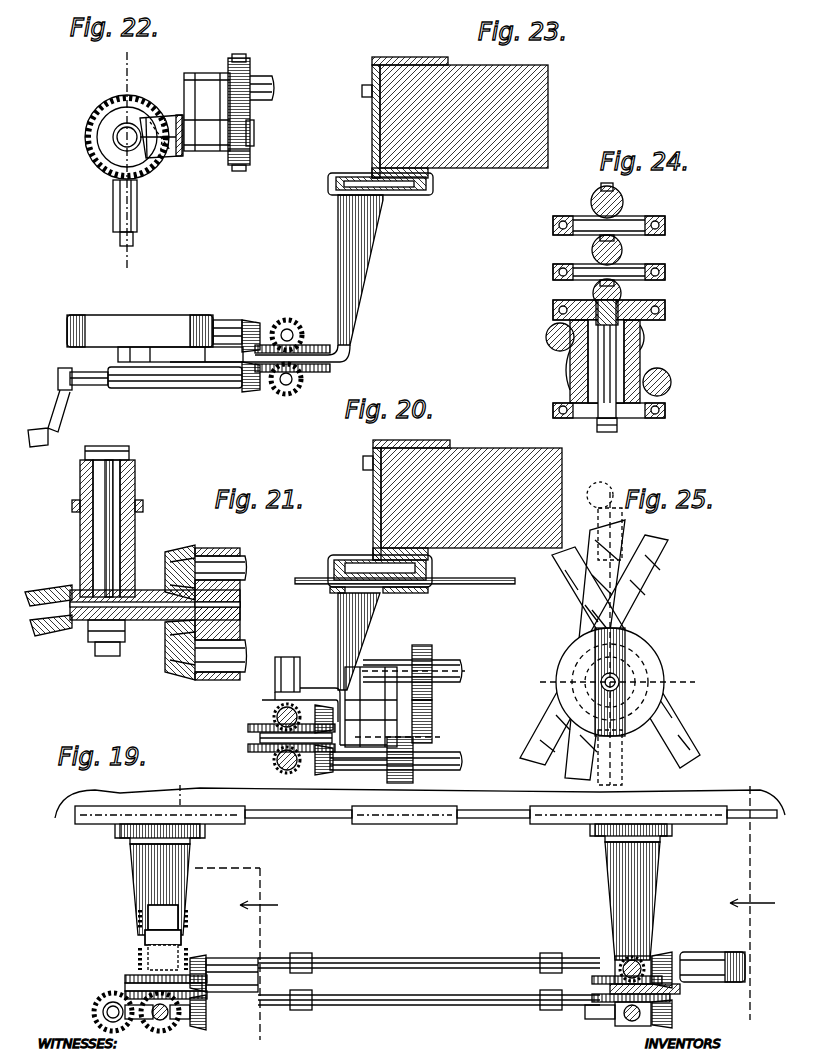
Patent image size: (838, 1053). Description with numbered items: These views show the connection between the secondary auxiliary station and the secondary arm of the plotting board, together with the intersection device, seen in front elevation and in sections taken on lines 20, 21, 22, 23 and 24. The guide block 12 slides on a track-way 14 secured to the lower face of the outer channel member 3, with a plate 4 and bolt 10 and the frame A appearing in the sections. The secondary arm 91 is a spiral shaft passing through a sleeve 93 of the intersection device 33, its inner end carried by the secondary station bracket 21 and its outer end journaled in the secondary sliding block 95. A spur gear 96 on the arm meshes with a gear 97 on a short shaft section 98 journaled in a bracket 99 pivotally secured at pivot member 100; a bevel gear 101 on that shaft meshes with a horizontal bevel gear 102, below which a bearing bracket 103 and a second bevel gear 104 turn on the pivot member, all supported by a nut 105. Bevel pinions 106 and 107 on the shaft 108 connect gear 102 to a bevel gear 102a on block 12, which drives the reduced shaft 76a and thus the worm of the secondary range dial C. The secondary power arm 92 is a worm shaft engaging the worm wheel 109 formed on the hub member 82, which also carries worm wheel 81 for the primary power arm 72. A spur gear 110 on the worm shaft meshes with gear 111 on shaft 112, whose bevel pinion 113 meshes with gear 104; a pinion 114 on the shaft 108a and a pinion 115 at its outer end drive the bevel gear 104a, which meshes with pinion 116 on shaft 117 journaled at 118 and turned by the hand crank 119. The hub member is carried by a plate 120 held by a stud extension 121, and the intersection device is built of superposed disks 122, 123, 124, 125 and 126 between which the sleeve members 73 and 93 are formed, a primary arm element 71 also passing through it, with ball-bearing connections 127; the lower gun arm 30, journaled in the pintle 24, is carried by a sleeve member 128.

In FIG. 23, the outer channel member 3 is at (460, 121).
In FIG. 20, the outer channel member 3 is at (467, 504).
In FIG. 23, the plate 4 is at (410, 52).
In FIG. 20, the plate 4 is at (411, 436).
In FIG. 20, the bolt 10 is at (365, 463).
In FIG. 23, the guide block 12 is at (328, 186).
In FIG. 19, the guide block 12 is at (377, 834).
In FIG. 23, the track-way 14 is at (356, 173).
In FIG. 20, the track-way 14 is at (357, 557).
In FIG. 19, the track-way 14 is at (420, 806).
In FIG. 19, the section line 20 is at (177, 789).
In FIG. 22, the secondary station bracket 21 is at (127, 165).
In FIG. 20, the section line 22 is at (300, 652).
In FIG. 25, the section line 23 is at (747, 783).
In FIG. 19, the section line 23 is at (485, 905).
In FIG. 25, the pintle 24 is at (613, 638).
In FIG. 24, the lower gun arm shaft 30 is at (601, 192).
In FIG. 25, the lower gun arm shaft 30 is at (604, 633).
In FIG. 24, the intersection device 33 is at (717, 249).
In FIG. 25, the intersection device 33 is at (662, 658).
In FIG. 24, the brush element 71 is at (584, 249).
In FIG. 25, the brush element 71 is at (656, 540).
In FIG. 24, the primary power arm worm shaft 72 is at (548, 340).
In FIG. 25, the primary power arm worm shaft 72 is at (618, 522).
In FIG. 24, the sleeve member 73 is at (621, 250).
In FIG. 23, the reduced shaft 76a is at (230, 318).
In FIG. 24, the worm wheel 81 is at (645, 338).
In FIG. 24, the hub member 82 is at (640, 360).
In FIG. 24, the secondary arm 91 is at (593, 290).
In FIG. 20, the secondary arm 91 is at (463, 674).
In FIG. 25, the secondary arm 91 is at (655, 775).
In FIG. 22, the secondary power arm 92 is at (268, 80).
In FIG. 24, the secondary power arm 92 is at (672, 382).
In FIG. 20, the secondary power arm 92 is at (462, 760).
In FIG. 25, the secondary power arm 92 is at (688, 730).
In FIG. 19, the secondary power arm 92 is at (93, 1014).
In FIG. 24, the sleeve 93 is at (622, 292).
In FIG. 22, the secondary sliding block 95 is at (170, 115).
In FIG. 23, the secondary sliding block 95 is at (276, 278).
In FIG. 20, the secondary sliding block 95 is at (370, 605).
In FIG. 21, the secondary sliding block 95 is at (133, 488).
In FIG. 19, the secondary sliding block 95 is at (145, 875).
In FIG. 20, the spur gear 96 is at (420, 648).
In FIG. 19, the spur gear 96 is at (178, 918).
In FIG. 20, the spur gear 97 is at (433, 698).
In FIG. 19, the spur gear 97 is at (180, 950).
In FIG. 20, the short shaft section 98 is at (433, 716).
In FIG. 19, the short shaft section 98 is at (147, 957).
In FIG. 22, the bracket 99 is at (207, 112).
In FIG. 20, the bracket 99 is at (371, 707).
In FIG. 21, the bracket 99 is at (135, 540).
In FIG. 22, the pivot member 100 is at (132, 112).
In FIG. 20, the pivot member 100 is at (301, 664).
In FIG. 21, the pivot member 100 is at (120, 468).
In FIG. 20, the bevel gear 101 is at (318, 688).
In FIG. 22, the bevel gear 102 is at (100, 120).
In FIG. 20, the bevel gear 102 is at (250, 730).
In FIG. 21, the bevel gear 102 is at (65, 592).
In FIG. 19, the bevel gear 102 is at (125, 977).
In FIG. 23, the bevel gear 102a is at (308, 336).
In FIG. 19, the bevel gear 102a is at (605, 972).
In FIG. 22, the bearing bracket 103 is at (135, 208).
In FIG. 20, the bearing bracket 103 is at (260, 738).
In FIG. 21, the bearing bracket 103 is at (240, 600).
In FIG. 19, the bearing bracket 103 is at (258, 990).
In FIG. 20, the bevel gear 104 is at (255, 752).
In FIG. 21, the bevel gear 104 is at (58, 634).
In FIG. 19, the bevel gear 104 is at (125, 995).
In FIG. 23, the bevel gear 104a is at (320, 368).
In FIG. 19, the bevel gear 104a is at (595, 1000).
In FIG. 21, the nut 105 is at (110, 655).
In FIG. 20, the bevel pinion 106 is at (278, 712).
In FIG. 21, the bevel pinion 106 is at (190, 556).
In FIG. 19, the bevel pinion 106 is at (205, 958).
In FIG. 23, the bevel pinion 107 is at (292, 325).
In FIG. 19, the bevel pinion 107 is at (668, 960).
In FIG. 22, the shaft 108 is at (133, 242).
In FIG. 23, the shaft 108 is at (252, 320).
In FIG. 20, the shaft 108 is at (278, 700).
In FIG. 21, the shaft 108 is at (244, 575).
In FIG. 19, the shaft 108 is at (655, 952).
In FIG. 20, the shaft 108a is at (283, 770).
In FIG. 21, the shaft 108a is at (244, 640).
In FIG. 19, the shaft 108a is at (429, 994).
In FIG. 24, the worm wheel 109 is at (572, 376).
In FIG. 22, the spur gear 110 is at (244, 62).
In FIG. 23, the spur gear 110 is at (366, 88).
In FIG. 19, the spur gear 110 is at (125, 987).
In FIG. 22, the spur gear 111 is at (240, 162).
In FIG. 20, the spur gear 111 is at (406, 782).
In FIG. 19, the spur gear 111 is at (185, 1028).
In FIG. 22, the short shaft section 112 is at (252, 132).
In FIG. 20, the short shaft section 112 is at (352, 752).
In FIG. 19, the short shaft section 112 is at (140, 1024).
In FIG. 22, the bevel pinion 113 is at (170, 158).
In FIG. 20, the bevel pinion 113 is at (336, 772).
In FIG. 19, the bevel pinion 113 is at (158, 1030).
In FIG. 20, the bevel pinion 114 is at (322, 775).
In FIG. 21, the bevel pinion 114 is at (178, 672).
In FIG. 19, the bevel pinion 114 is at (205, 1022).
In FIG. 23, the bevel pinion 115 is at (290, 390).
In FIG. 19, the bevel pinion 115 is at (638, 1022).
In FIG. 23, the bevel pinion 116 is at (252, 392).
In FIG. 19, the bevel pinion 116 is at (672, 1016).
In FIG. 23, the short shaft section 117 is at (92, 388).
In FIG. 19, the short shaft section 117 is at (615, 1022).
In FIG. 23, the journal 118 is at (172, 388).
In FIG. 23, the hand crank 119 is at (50, 397).
In FIG. 24, the plate 120 is at (636, 418).
In FIG. 24, the stud extension 121 is at (598, 412).
In FIG. 24, the disk 122 is at (575, 220).
In FIG. 24, the disk 123 is at (568, 236).
In FIG. 24, the disk 124 is at (562, 268).
In FIG. 24, the disk 125 is at (565, 280).
In FIG. 24, the disk 126 is at (560, 306).
In FIG. 24, the ball-bearing connection 127 is at (665, 226).
In FIG. 24, the sleeve member 128 is at (618, 205).
In FIG. 25, the sleeve member 128 is at (606, 682).
In FIG. 23, the machine frame A is at (545, 112).
In FIG. 20, the machine frame A is at (455, 452).
In FIG. 23, the secondary arm range dial C is at (155, 338).
In FIG. 19, the secondary arm range dial C is at (712, 967).